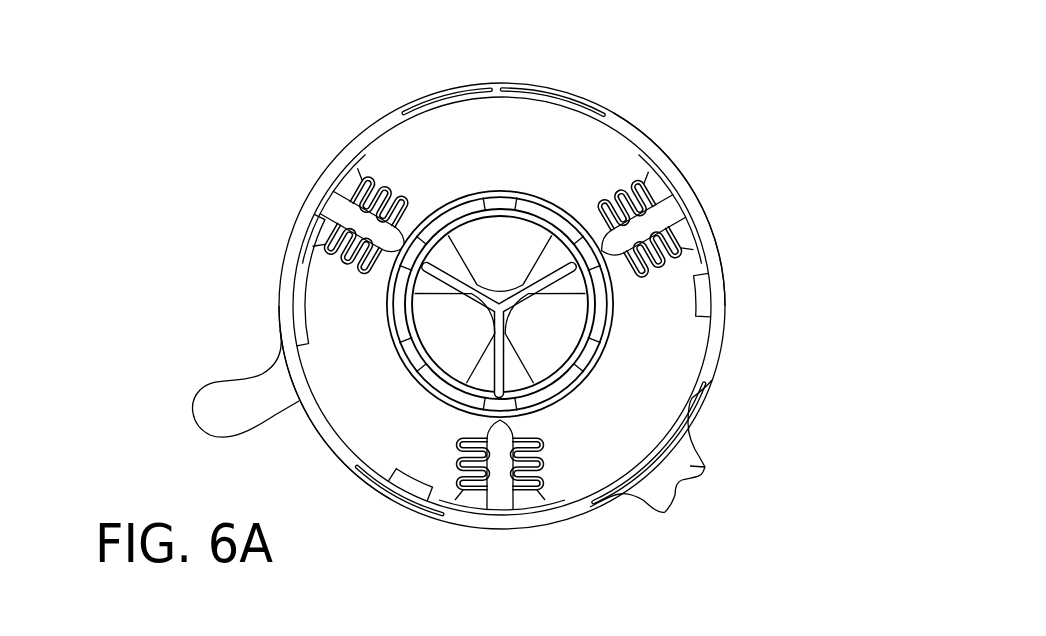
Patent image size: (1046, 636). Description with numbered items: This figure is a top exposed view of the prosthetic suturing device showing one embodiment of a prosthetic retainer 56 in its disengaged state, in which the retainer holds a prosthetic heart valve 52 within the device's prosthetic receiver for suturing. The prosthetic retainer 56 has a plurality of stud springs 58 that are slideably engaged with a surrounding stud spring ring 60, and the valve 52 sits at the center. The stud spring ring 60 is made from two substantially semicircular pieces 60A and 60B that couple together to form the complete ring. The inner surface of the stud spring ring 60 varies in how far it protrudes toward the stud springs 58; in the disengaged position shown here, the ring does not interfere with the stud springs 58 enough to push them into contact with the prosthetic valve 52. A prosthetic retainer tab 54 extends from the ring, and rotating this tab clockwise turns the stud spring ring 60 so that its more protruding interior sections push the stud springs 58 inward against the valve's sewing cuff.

The prosthetic heart valve 52 is at (520, 260).
The prosthetic retainer tab 54 is at (705, 468).
The prosthetic retainer 56 is at (168, 119).
The stud springs 58 is at (325, 205).
The stud spring ring 60 is at (725, 297).
The semicircular piece 60A is at (733, 244).
The semicircular piece 60B is at (309, 453).